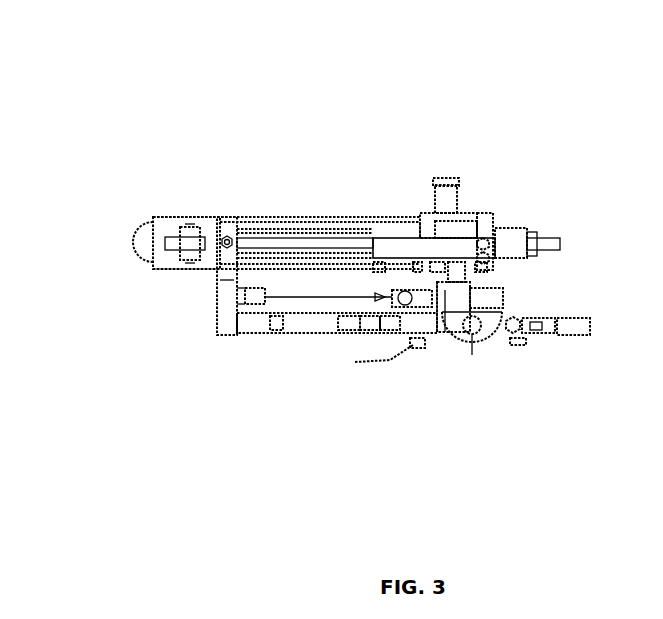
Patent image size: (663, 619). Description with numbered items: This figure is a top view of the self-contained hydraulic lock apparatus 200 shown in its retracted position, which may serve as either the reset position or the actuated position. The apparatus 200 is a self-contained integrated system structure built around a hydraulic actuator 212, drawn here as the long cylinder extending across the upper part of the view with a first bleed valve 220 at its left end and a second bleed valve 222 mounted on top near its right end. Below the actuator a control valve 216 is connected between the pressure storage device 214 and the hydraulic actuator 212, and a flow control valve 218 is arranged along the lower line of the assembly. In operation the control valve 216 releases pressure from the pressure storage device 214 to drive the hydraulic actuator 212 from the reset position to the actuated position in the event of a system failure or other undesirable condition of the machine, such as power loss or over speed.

The self-contained hydraulic lock apparatus 200 is at (116, 130).
The hydraulic actuator 212 is at (278, 242).
The pressure storage device 214 is at (478, 352).
The control valve 216 is at (455, 293).
The flow control valve 218 is at (425, 345).
The first bleed valve 220 is at (187, 217).
The second bleed valve 222 is at (432, 262).